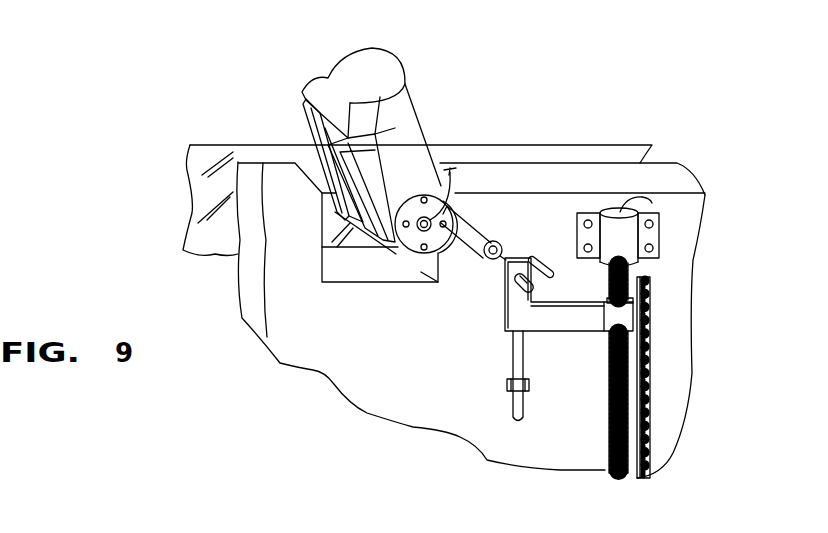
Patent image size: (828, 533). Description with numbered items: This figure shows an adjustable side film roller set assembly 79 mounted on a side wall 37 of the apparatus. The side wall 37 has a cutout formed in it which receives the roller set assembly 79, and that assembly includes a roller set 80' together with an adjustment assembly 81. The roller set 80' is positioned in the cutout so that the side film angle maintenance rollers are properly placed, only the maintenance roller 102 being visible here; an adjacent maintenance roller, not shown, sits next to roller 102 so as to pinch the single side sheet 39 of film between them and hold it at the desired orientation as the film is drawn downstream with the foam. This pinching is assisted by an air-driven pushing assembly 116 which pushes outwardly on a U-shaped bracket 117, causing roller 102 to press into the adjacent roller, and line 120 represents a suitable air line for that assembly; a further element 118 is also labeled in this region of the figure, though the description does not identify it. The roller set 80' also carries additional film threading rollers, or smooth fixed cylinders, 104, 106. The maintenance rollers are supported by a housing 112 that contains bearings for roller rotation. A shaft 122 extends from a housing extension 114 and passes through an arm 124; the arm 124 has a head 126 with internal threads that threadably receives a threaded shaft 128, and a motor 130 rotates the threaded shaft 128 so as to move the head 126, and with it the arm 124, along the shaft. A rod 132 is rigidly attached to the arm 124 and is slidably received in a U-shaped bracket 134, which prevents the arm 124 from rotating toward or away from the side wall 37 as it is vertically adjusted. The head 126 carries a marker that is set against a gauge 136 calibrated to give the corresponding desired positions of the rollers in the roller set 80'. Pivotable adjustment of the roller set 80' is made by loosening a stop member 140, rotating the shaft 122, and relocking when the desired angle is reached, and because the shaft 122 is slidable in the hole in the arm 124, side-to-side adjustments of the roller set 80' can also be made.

The side wall 37 is at (278, 338).
The single side sheet 39 is at (202, 232).
The roller set assembly 79 is at (580, 157).
The roller set 80' is at (372, 70).
The adjustment assembly 81 is at (548, 303).
The maintenance roller 102 is at (358, 228).
The film threading roller 104 is at (327, 165).
The film threading roller 106 is at (323, 170).
The housing 112 is at (415, 125).
The housing extension 114 is at (460, 210).
The pushing assembly 116 is at (425, 256).
The U-shaped bracket 117 is at (425, 160).
The wire 118 is at (470, 178).
The air line 120 is at (468, 184).
The shaft 122 is at (498, 260).
The arm 124 is at (567, 323).
The head 126 is at (620, 320).
The threaded shaft 128 is at (610, 467).
The motor 130 is at (627, 240).
The rod 132 is at (527, 415).
The U-shaped bracket 134 is at (507, 382).
The gauge 136 is at (648, 405).
The stop member 140 is at (548, 263).